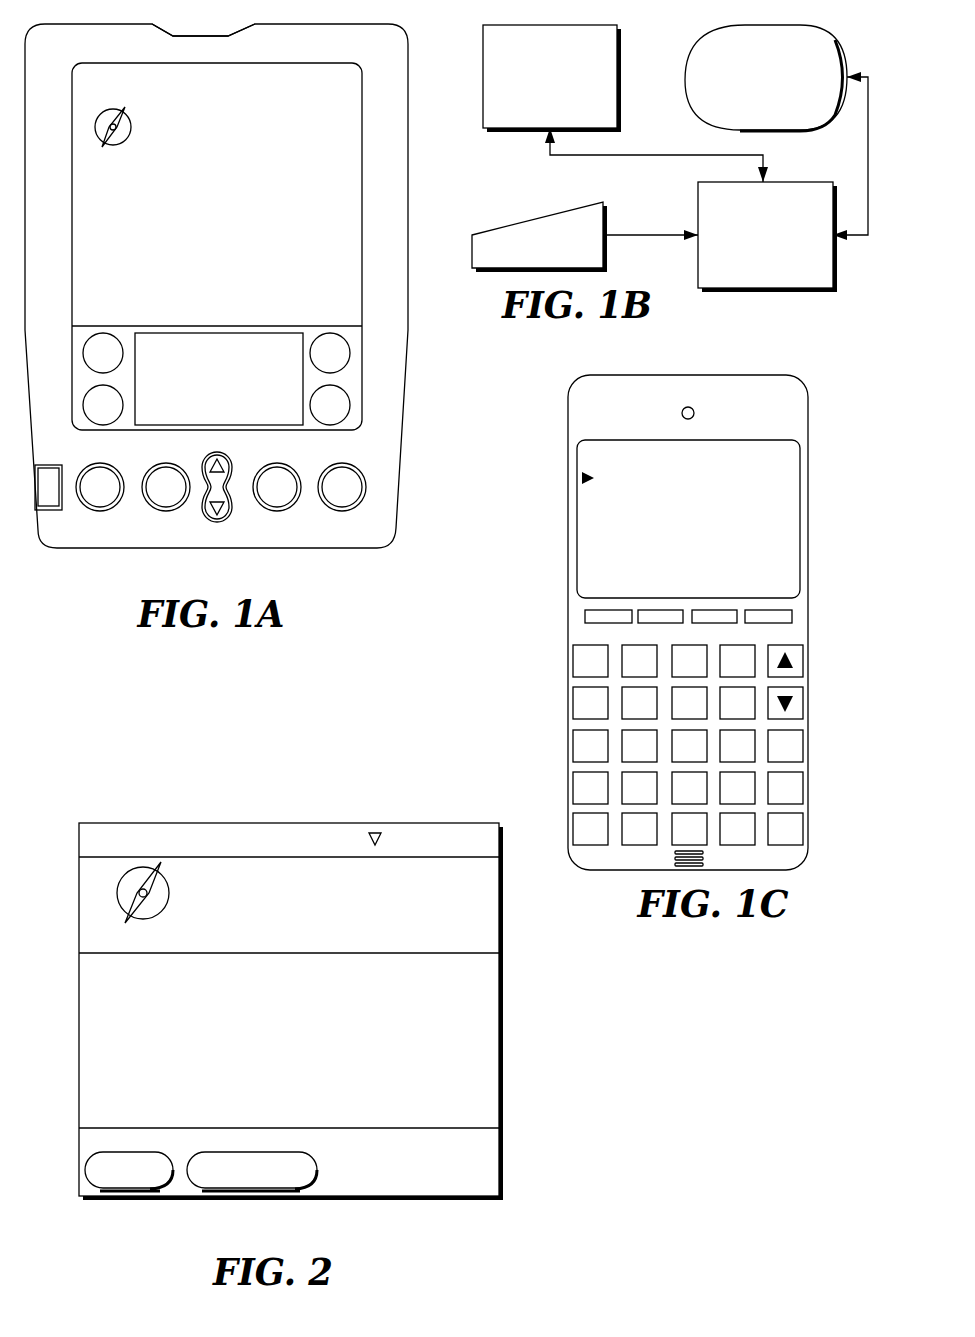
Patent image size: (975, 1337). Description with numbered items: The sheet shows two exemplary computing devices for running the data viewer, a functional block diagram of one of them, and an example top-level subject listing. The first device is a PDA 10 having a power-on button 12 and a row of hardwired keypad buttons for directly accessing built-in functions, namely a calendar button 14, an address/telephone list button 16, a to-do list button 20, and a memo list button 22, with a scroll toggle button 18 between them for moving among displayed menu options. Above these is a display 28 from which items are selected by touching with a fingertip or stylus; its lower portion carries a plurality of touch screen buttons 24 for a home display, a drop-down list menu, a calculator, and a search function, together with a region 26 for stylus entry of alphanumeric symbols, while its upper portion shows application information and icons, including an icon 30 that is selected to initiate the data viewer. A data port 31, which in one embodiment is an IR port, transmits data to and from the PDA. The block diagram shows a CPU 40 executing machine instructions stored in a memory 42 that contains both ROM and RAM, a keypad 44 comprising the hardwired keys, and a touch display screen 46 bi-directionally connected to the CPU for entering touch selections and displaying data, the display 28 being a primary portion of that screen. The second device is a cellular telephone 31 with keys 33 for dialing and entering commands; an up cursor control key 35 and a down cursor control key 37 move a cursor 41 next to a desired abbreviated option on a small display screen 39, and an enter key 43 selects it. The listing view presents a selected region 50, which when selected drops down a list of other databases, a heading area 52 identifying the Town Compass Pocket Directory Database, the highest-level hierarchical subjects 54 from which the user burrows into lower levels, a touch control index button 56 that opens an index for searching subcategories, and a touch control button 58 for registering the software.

In FIG. 1A, the PDA 10 is at (97, 579).
In FIG. 1A, the power-on button 12 is at (50, 500).
In FIG. 1A, the calendar button 14 is at (102, 497).
In FIG. 1A, the address/telephone list button 16 is at (170, 497).
In FIG. 1A, the scroll toggle button 18 is at (222, 520).
In FIG. 1A, the to-do list button 20 is at (280, 497).
In FIG. 1A, the memo list button 22 is at (345, 497).
In FIG. 1A, the touch screen buttons 24 is at (88, 354).
In FIG. 1A, the region 26 is at (219, 381).
In FIG. 1A, the display 28 is at (217, 246).
In FIG. 2, the display 28 is at (503, 977).
In FIG. 1A, the icon 30 is at (131, 126).
In FIG. 1A, the data port / cellular telephone 31 is at (228, 36).
In FIG. 1C, the data port / cellular telephone 31 is at (535, 525).
In FIG. 1C, the keys 33 is at (573, 689).
In FIG. 1C, the up cursor control key 35 is at (805, 648).
In FIG. 1C, the down cursor control key 37 is at (800, 700).
In FIG. 1C, the display screen 39 is at (577, 577).
In FIG. 1B, the CPU 40 is at (698, 269).
In FIG. 1C, the cursor 41 is at (580, 478).
In FIG. 1B, the memory 42 is at (483, 104).
In FIG. 1C, the enter key 43 is at (803, 760).
In FIG. 1B, the keypad 44 is at (492, 235).
In FIG. 1B, the touch display screen 46 is at (690, 106).
In FIG. 2, the region 50 is at (467, 826).
In FIG. 2, the heading area 52 is at (495, 903).
In FIG. 2, the highest-level hierarchical subjects 54 is at (79, 1049).
In FIG. 2, the touch control index button 56 is at (87, 1184).
In FIG. 2, the touch control button 58 is at (300, 1184).